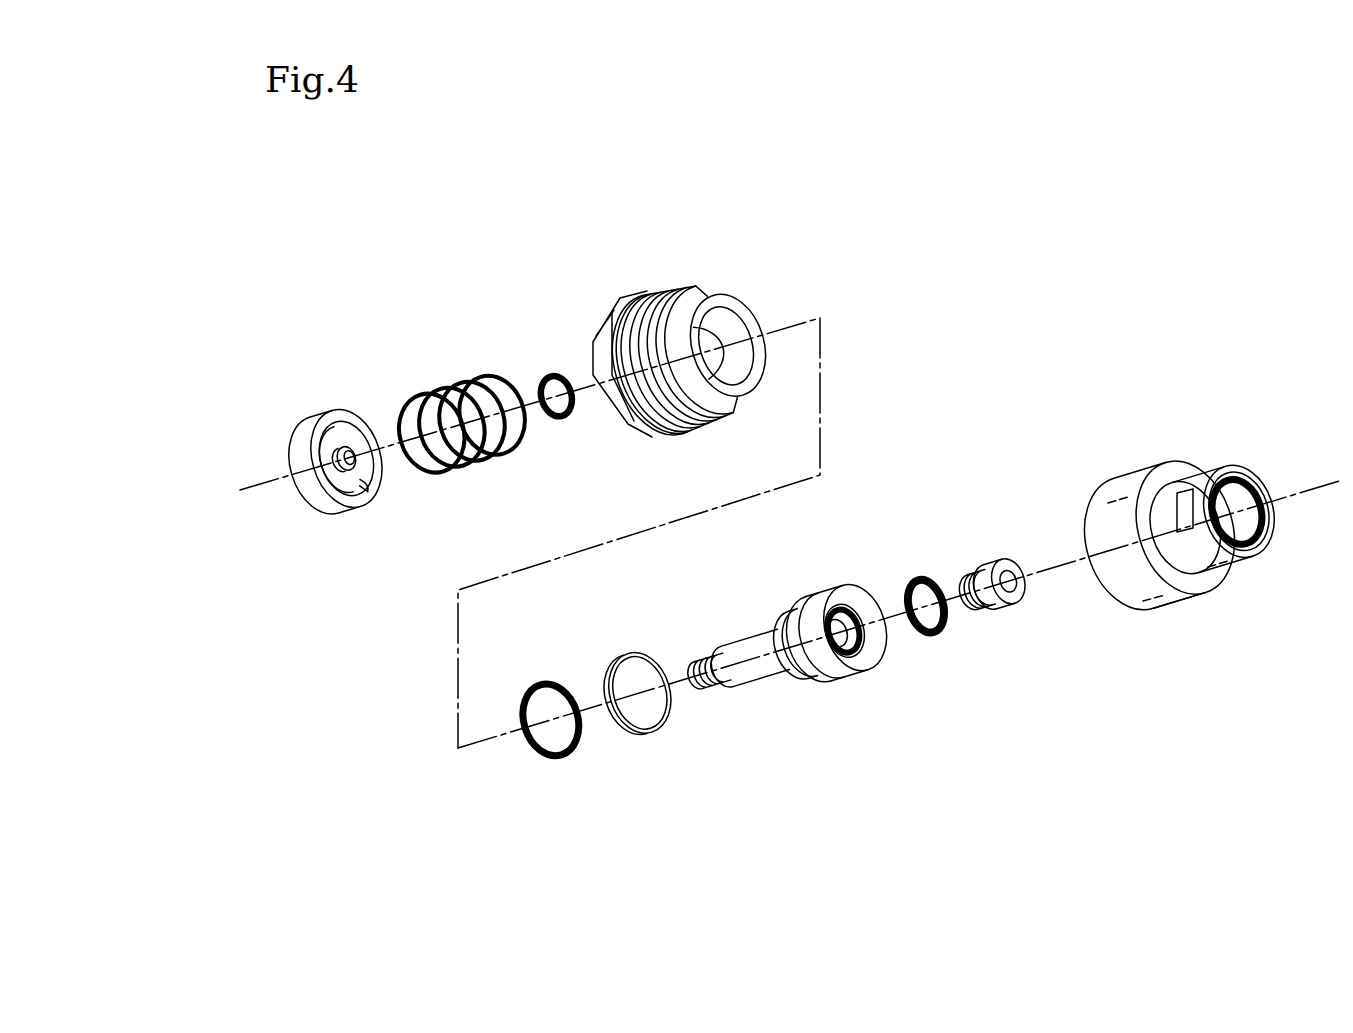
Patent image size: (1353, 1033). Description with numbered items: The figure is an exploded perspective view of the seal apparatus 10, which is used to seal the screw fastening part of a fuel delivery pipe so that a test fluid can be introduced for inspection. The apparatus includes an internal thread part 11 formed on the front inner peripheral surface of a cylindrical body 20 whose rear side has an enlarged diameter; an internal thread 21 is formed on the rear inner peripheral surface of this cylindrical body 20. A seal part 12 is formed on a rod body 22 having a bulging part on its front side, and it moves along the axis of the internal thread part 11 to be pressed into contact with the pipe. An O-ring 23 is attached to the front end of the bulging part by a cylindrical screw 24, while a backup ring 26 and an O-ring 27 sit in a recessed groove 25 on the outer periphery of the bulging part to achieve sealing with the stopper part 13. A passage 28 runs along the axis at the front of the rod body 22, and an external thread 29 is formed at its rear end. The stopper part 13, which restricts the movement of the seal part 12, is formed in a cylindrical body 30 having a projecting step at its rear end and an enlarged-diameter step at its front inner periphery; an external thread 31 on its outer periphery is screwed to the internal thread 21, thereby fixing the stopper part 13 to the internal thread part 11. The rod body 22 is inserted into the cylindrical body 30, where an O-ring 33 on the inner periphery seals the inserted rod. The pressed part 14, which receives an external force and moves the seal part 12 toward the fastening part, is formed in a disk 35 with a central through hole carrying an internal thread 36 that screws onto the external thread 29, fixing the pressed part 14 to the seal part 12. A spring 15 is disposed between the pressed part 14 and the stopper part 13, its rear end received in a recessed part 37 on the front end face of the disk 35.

The seal apparatus 10 is at (957, 399).
The internal thread part 11 is at (1262, 557).
The seal part 12 is at (787, 670).
The stopper part 13 is at (648, 340).
The pressed part 14 is at (333, 412).
The spring 15 is at (457, 385).
The cylindrical body 20 is at (1160, 487).
The internal thread 21 is at (1092, 575).
The rod body 22 is at (777, 612).
The O-ring 23 is at (935, 642).
The cylindrical screw 24 is at (993, 567).
The recessed groove 25 is at (818, 683).
The backup ring 26 is at (652, 733).
The O-ring 27 is at (541, 753).
The passage 28 is at (852, 607).
The external thread 29 is at (716, 655).
The cylindrical body 30 is at (651, 407).
The external thread 31 is at (666, 297).
The O-ring 33 is at (560, 375).
The disk 35 is at (312, 488).
The internal thread 36 is at (354, 452).
The recessed part 37 is at (372, 495).